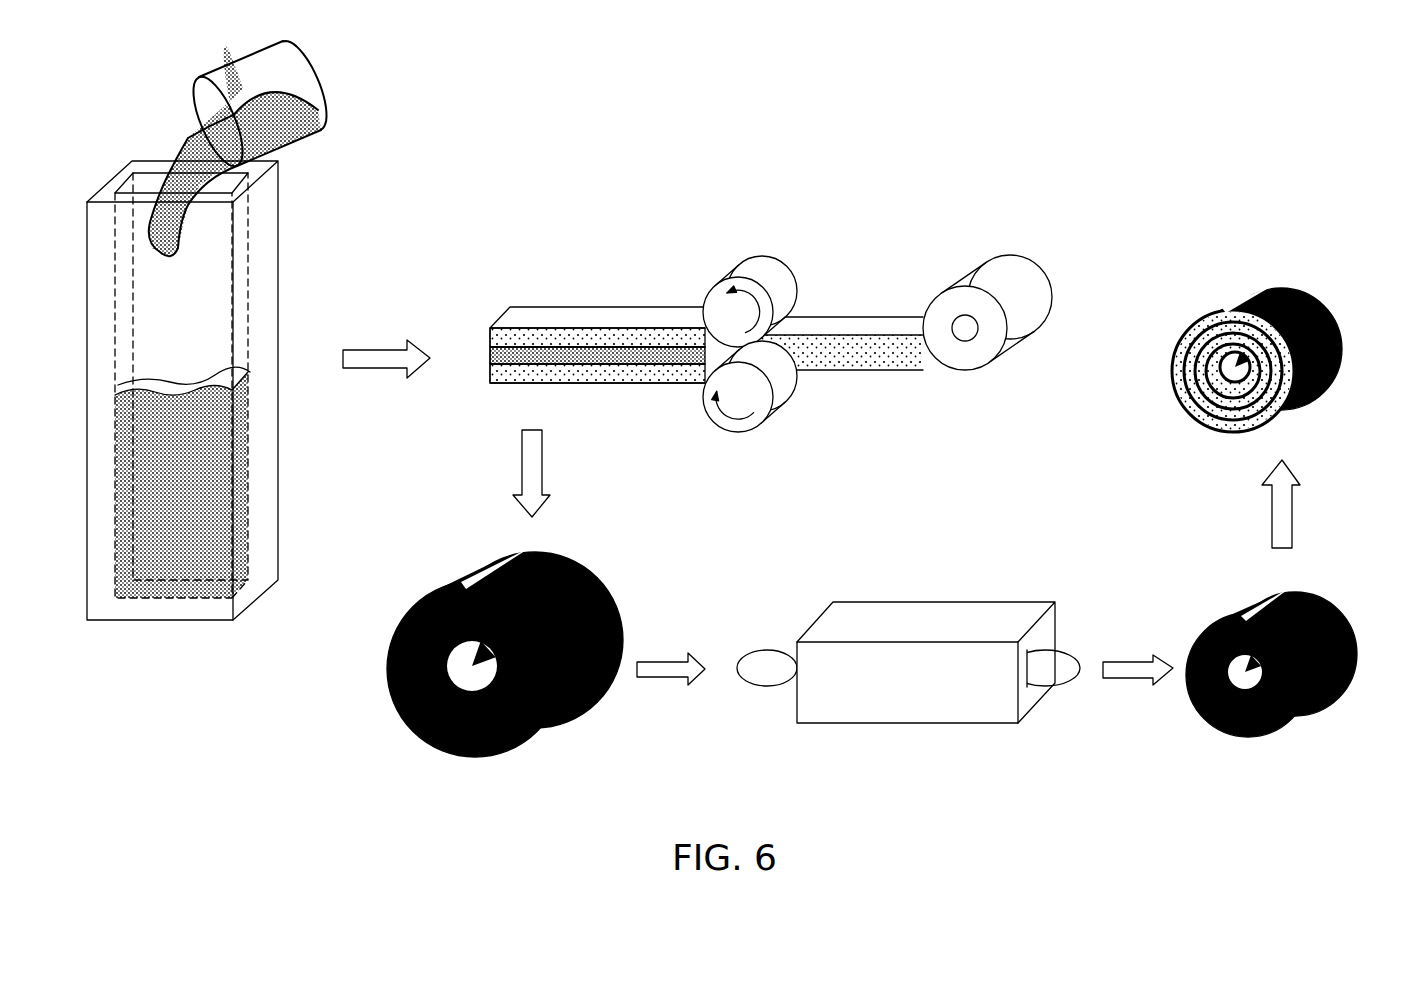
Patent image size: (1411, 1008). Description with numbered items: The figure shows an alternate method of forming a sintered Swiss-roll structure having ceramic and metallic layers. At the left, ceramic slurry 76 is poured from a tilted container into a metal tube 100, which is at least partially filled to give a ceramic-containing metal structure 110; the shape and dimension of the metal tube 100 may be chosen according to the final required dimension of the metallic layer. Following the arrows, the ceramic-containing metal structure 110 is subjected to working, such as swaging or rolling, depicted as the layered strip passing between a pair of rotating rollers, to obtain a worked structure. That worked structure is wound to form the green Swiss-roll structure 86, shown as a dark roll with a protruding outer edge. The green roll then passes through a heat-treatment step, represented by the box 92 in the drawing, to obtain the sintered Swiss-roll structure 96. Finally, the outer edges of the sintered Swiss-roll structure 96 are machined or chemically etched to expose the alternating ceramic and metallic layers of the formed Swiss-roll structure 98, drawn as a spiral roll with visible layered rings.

The ceramic slurry 76 is at (188, 138).
The ceramic-containing metal structure 110 is at (288, 482).
The metal tube 100 is at (180, 613).
The green Swiss-roll structure 86 is at (570, 557).
The curing oven 92 is at (1017, 583).
The sintered Swiss-roll structure 96 is at (1343, 570).
The formed Swiss-roll structure 98 is at (1327, 267).